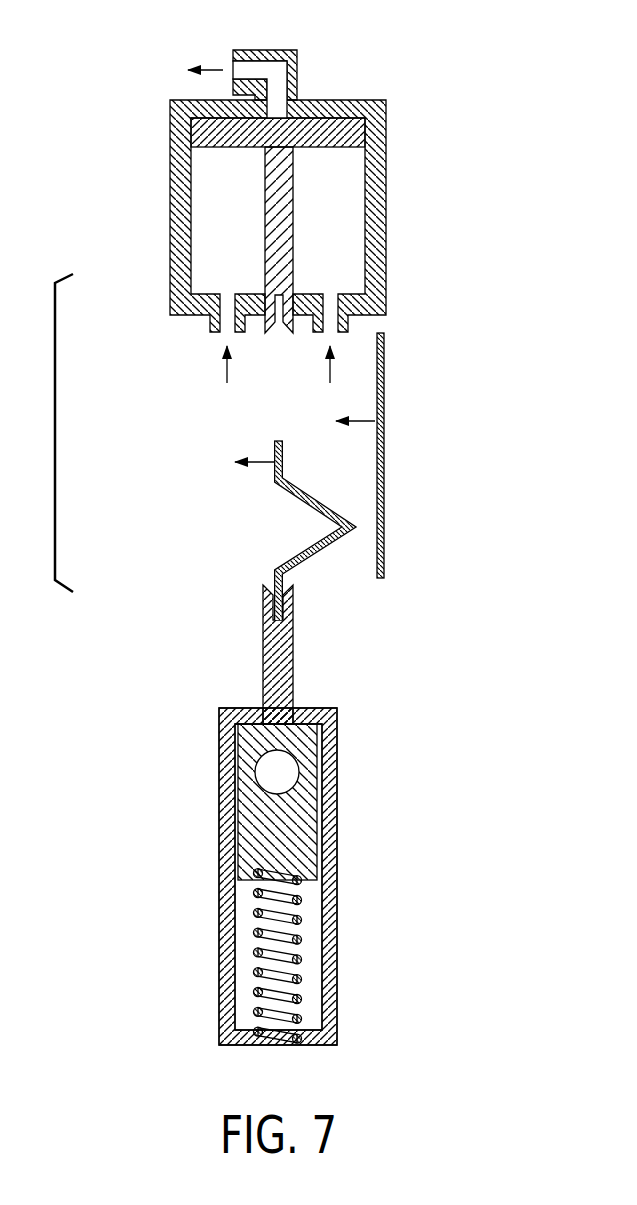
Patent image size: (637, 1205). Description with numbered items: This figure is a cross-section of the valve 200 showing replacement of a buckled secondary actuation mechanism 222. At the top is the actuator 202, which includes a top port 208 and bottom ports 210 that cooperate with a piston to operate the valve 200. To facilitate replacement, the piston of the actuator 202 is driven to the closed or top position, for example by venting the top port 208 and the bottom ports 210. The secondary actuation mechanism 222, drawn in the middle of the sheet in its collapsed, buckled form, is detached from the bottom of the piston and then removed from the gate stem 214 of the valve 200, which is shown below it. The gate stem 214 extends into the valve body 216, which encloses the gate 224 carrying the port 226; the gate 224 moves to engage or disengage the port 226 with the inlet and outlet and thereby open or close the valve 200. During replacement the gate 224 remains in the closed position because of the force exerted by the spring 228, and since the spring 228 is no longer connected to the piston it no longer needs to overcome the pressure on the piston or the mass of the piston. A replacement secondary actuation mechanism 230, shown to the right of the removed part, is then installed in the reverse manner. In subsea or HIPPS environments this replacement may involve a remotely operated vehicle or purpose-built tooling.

The valve 200 is at (431, 682).
The actuator 202 is at (386, 200).
The top port 208 is at (232, 60).
The bottom port 210 is at (223, 334).
The gate stem 214 is at (293, 672).
The valve body 216 is at (219, 796).
The secondary actuation mechanism 222 is at (278, 489).
The gate 224 is at (243, 850).
The port 226 is at (292, 778).
The spring 228 is at (257, 992).
The replacement secondary actuation mechanism 230 is at (384, 447).